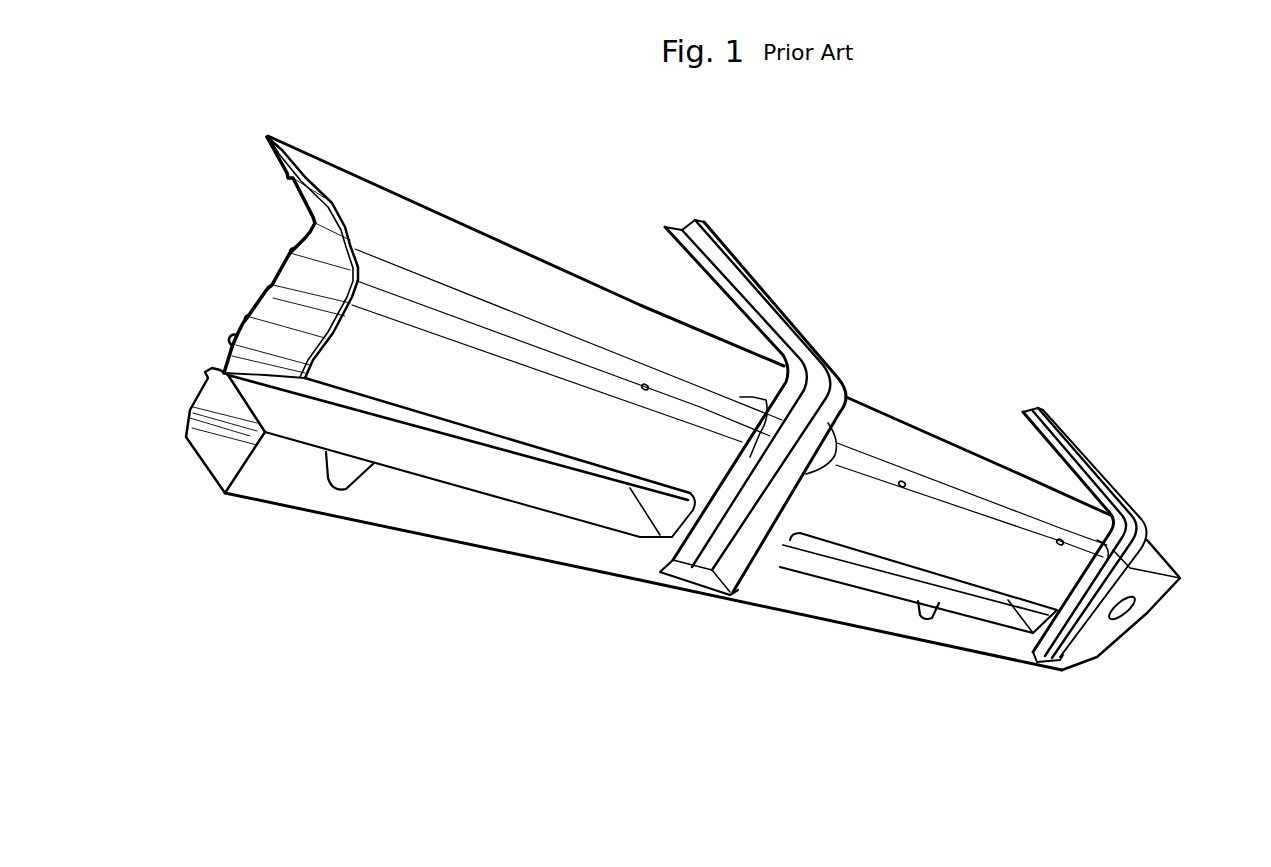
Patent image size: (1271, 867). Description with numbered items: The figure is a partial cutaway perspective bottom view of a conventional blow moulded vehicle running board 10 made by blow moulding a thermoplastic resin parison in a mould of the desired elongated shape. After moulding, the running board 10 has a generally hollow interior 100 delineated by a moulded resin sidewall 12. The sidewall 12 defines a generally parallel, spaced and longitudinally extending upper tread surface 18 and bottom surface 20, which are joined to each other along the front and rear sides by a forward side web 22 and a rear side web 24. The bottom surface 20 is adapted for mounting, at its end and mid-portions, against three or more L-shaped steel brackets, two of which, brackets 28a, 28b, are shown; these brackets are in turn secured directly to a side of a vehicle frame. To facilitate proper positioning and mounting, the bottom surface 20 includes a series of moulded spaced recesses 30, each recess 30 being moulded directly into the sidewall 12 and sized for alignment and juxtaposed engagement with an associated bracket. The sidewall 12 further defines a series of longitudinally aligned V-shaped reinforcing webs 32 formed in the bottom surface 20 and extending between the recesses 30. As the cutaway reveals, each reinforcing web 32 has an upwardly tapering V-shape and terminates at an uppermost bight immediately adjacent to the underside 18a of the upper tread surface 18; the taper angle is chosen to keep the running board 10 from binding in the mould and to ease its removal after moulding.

The running board 10 is at (724, 370).
The sidewall 12 is at (240, 310).
The upper tread surface 18 is at (281, 283).
The underside of the upper tread surface 18a is at (250, 340).
The bottom surface 20 is at (388, 510).
The forward side web 22 is at (203, 470).
The rear side web 24 is at (533, 272).
The L-shaped steel bracket 28a is at (790, 327).
The L-shaped steel bracket 28b is at (1100, 467).
The recess 30 is at (672, 577).
The V-shaped reinforcing web 32 is at (557, 497).
The hollow interior 100 is at (205, 441).